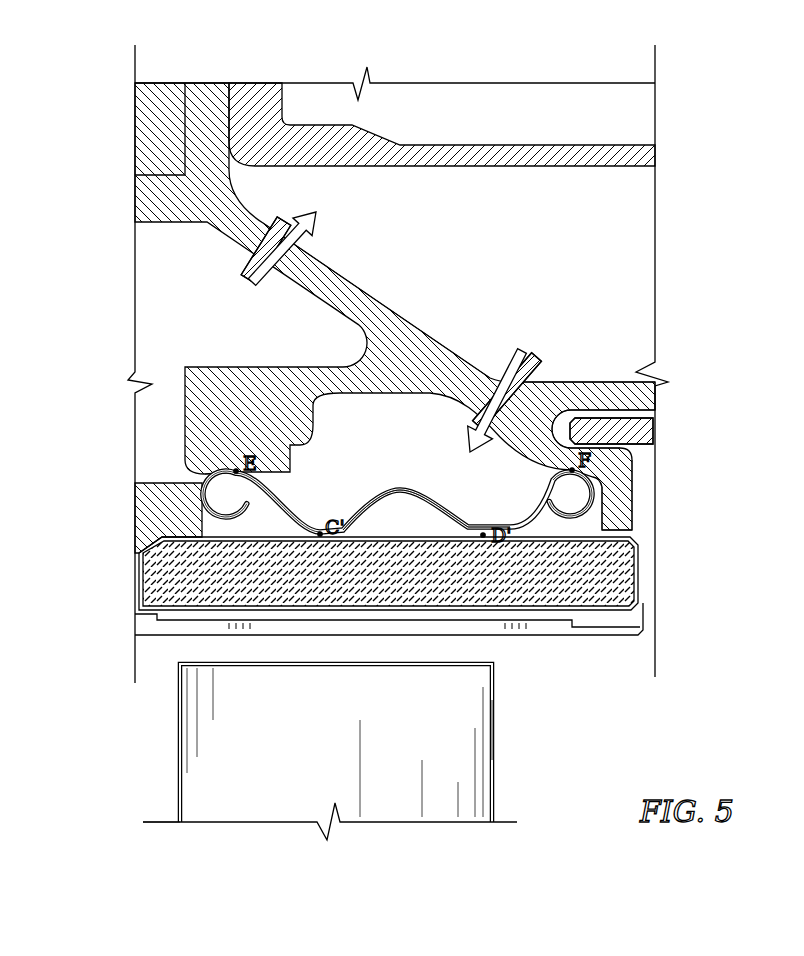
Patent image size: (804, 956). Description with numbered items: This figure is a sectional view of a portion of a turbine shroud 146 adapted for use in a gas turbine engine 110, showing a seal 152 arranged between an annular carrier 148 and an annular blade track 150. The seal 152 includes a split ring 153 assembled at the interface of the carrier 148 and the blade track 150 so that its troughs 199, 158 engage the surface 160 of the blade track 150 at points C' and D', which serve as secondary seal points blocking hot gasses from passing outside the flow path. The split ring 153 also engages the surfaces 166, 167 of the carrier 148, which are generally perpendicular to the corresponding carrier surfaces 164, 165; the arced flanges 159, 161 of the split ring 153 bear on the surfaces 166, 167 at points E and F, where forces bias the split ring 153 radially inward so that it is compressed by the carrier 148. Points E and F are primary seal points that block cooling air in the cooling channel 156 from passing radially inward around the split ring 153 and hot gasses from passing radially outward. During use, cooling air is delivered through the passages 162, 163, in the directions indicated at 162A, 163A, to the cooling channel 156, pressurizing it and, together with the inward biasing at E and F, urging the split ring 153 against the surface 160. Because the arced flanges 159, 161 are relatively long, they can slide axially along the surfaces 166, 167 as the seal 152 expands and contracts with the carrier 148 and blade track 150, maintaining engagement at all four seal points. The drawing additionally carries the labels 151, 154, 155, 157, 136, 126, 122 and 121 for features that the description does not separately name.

The gas turbine engine 110 is at (737, 265).
The turbine shroud 146 is at (642, 300).
The carrier 148 is at (346, 219).
The seal 152 is at (356, 392).
The cooling channel 156 is at (590, 392).
The passage 162 is at (290, 272).
The first flow direction 162A is at (282, 228).
The passage 163 is at (498, 392).
The second flow direction 163A is at (544, 368).
The surface 164 is at (200, 518).
The surface 165 is at (606, 526).
The surface 166 is at (278, 472).
The surface 167 is at (604, 489).
The blade track 150 is at (736, 563).
The plate backing 151 is at (652, 583).
The split ring 153 is at (378, 475).
The seal hump 154 is at (397, 476).
The seal left leg 155 is at (342, 496).
The seal right leg 157 is at (444, 486).
The trough 158 is at (489, 509).
The arced flange 159 is at (250, 498).
The arced flange 161 is at (556, 498).
The trough 199 is at (311, 507).
The surface 160 is at (446, 535).
The duct interior 136 is at (299, 690).
The duct wall 126 is at (502, 766).
The duct 122 is at (580, 713).
The lower structure 121 is at (136, 732).